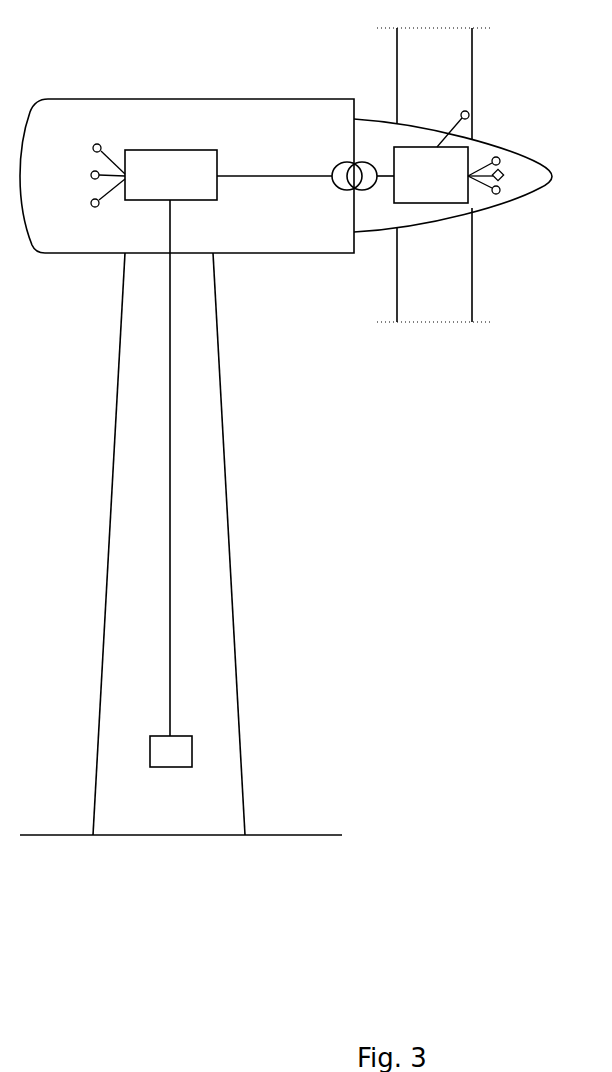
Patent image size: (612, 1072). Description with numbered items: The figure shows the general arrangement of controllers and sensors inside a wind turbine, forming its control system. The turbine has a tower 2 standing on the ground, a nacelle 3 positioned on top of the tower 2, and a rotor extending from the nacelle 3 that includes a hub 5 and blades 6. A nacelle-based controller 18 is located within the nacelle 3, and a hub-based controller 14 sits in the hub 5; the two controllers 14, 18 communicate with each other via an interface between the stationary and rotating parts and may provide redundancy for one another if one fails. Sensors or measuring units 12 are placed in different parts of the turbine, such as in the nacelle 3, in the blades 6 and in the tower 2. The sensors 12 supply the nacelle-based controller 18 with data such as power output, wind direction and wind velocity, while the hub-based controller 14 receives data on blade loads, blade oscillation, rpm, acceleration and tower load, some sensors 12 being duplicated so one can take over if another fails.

The tower 2 is at (220, 615).
The nacelle 3 is at (158, 118).
The hub 5 is at (375, 107).
The blades 6 is at (462, 87).
The sensors or measuring units 12 is at (92, 199).
The hub-based controller 14 is at (431, 175).
The nacelle-based controller 18 is at (171, 175).